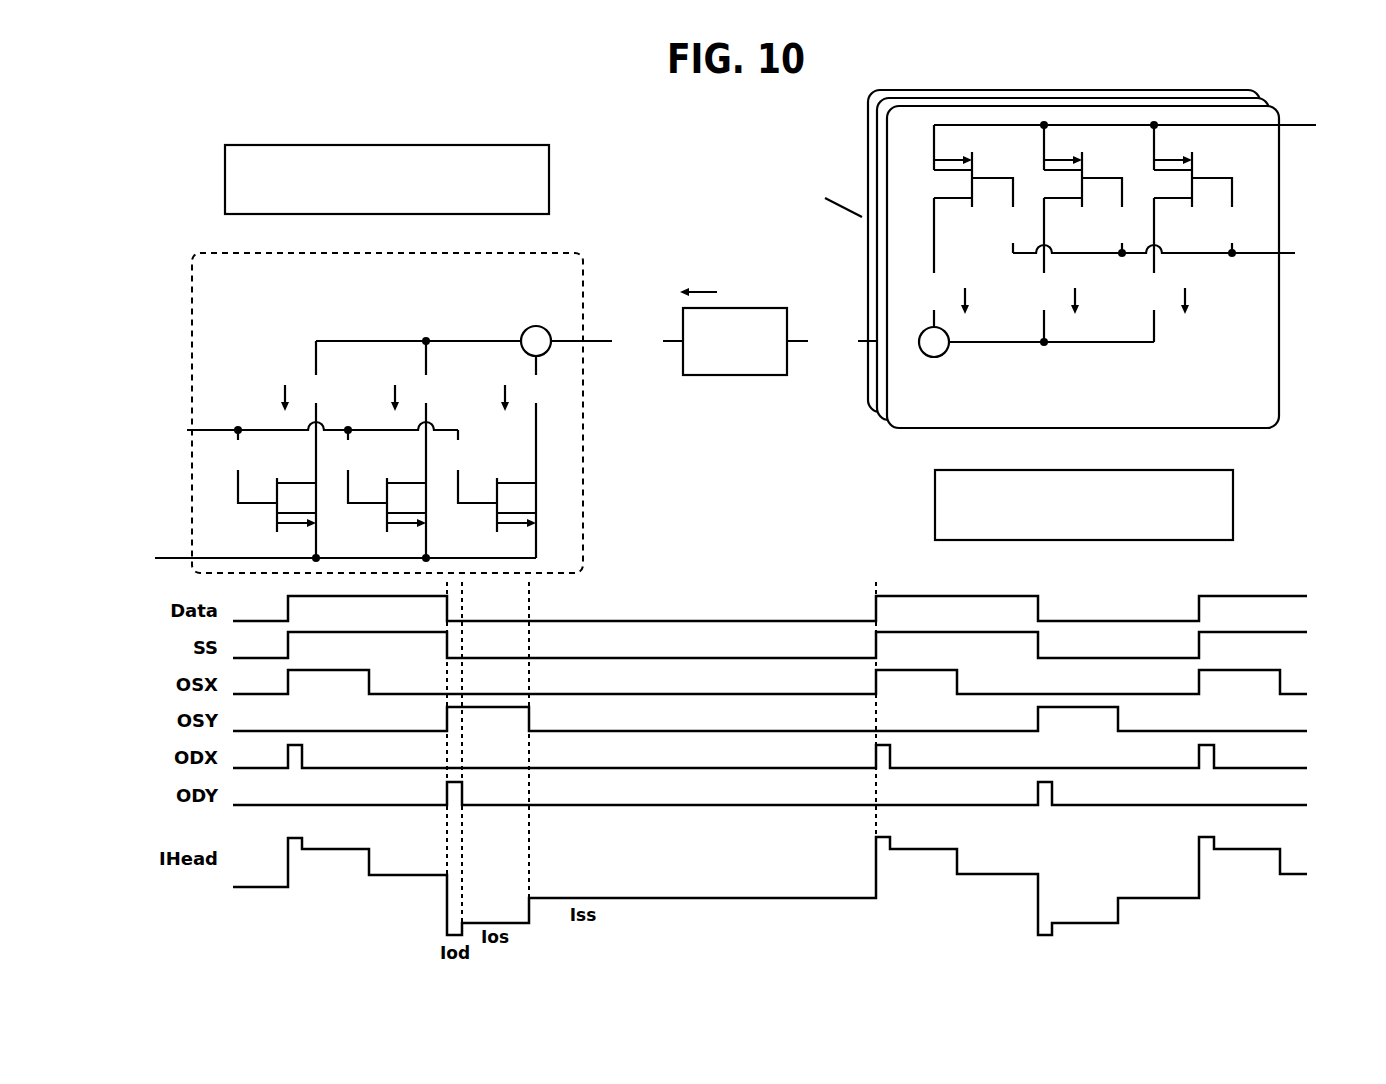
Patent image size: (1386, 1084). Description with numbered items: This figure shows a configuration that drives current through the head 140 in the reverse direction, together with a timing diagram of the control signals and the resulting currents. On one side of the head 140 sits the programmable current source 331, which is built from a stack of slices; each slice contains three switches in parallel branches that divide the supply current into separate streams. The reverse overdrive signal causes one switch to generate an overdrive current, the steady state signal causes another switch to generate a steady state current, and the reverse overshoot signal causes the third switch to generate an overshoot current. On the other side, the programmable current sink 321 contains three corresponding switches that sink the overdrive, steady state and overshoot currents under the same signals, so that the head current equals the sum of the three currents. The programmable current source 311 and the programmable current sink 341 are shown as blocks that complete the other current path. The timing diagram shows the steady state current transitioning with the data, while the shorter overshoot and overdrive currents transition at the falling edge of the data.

The programmable current source 311 is at (387, 179).
The programmable current sink 321 is at (352, 413).
The programmable current source 331 is at (1040, 259).
The programmable current sink 341 is at (1084, 505).
The head 140 is at (769, 349).